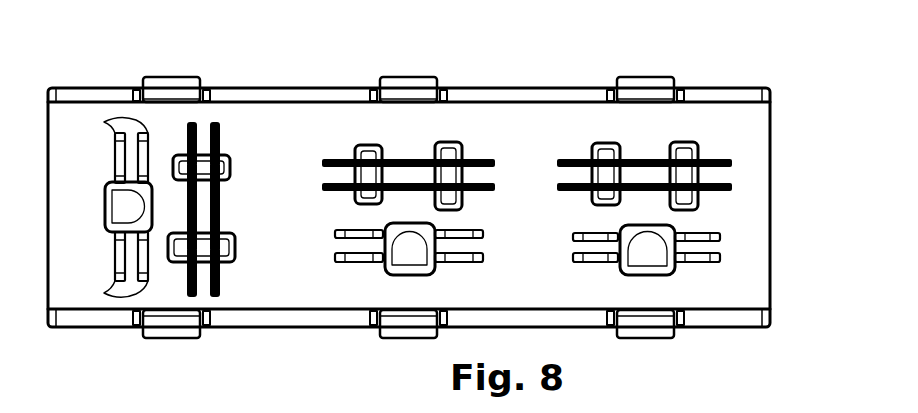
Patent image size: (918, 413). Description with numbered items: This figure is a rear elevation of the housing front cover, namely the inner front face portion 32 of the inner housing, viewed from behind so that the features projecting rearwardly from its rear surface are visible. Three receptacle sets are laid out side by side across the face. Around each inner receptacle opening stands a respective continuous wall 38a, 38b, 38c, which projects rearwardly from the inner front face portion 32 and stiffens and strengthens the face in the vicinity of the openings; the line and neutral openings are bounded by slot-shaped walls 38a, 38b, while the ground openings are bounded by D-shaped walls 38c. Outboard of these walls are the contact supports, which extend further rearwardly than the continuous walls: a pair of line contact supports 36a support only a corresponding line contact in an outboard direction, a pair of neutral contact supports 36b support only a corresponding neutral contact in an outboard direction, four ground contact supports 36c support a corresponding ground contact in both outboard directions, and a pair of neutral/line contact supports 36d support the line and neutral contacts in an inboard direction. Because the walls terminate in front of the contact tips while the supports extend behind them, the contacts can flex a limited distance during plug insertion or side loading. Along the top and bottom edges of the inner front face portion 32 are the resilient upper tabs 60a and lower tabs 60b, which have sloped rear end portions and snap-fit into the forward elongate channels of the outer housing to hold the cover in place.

The inner front face portion 32 is at (88, 87).
The line contact supports 36a is at (192, 121).
The neutral contact supports 36b is at (192, 298).
The ground contact supports 36c is at (106, 125).
The neutral/line contact supports 36d is at (205, 195).
The continuous wall 38a is at (230, 163).
The continuous wall 38b is at (452, 143).
The continuous wall 38c is at (105, 207).
The upper tabs 60a is at (180, 77).
The lower tabs 60b is at (160, 340).